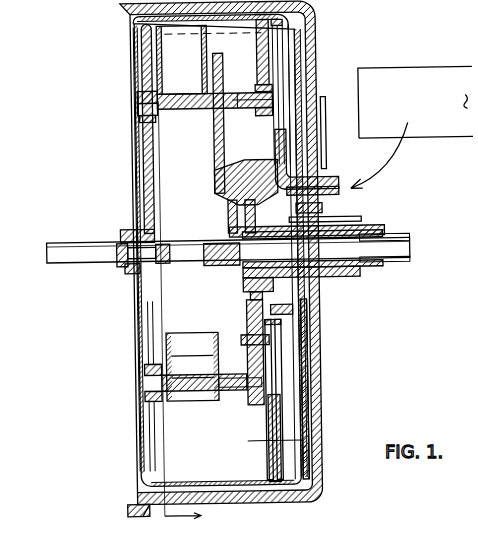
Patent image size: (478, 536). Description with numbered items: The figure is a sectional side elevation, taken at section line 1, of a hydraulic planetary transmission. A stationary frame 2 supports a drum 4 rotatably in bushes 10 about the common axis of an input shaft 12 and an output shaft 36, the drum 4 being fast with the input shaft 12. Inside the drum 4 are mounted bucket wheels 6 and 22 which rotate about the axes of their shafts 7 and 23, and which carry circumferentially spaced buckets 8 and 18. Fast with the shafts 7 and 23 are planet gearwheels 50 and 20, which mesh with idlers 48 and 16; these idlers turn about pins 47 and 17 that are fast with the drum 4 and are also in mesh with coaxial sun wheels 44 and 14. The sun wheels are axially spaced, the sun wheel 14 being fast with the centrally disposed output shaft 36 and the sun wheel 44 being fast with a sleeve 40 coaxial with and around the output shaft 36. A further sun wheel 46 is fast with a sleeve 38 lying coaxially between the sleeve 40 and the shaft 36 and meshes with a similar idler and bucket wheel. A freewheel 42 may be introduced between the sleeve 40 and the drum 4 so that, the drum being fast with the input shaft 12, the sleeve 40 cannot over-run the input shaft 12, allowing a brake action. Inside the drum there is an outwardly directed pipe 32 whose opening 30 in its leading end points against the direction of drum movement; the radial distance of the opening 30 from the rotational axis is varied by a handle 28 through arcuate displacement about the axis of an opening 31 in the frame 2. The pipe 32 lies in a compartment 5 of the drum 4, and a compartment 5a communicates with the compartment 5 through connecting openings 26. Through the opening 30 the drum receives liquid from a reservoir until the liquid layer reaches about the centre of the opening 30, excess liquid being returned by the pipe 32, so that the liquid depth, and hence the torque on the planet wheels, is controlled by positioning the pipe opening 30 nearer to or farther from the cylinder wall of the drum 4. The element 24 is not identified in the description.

The section line I—I 1 is at (173, 315).
The frame 2 is at (130, 487).
The drum 4 is at (150, 442).
The compartment 5 is at (295, 455).
The compartment 5a is at (300, 441).
The bucket wheel 6 is at (160, 396).
The shaft 7 is at (234, 384).
The bucket 8 is at (170, 342).
The bush 10 is at (124, 270).
The input shaft 12 is at (80, 256).
The sun wheel 14 is at (230, 221).
The idler 16 is at (229, 191).
The pin 17 is at (228, 167).
The bucket 18 is at (182, 165).
The planet gearwheel 20 is at (156, 121).
The bucket wheel 22 is at (136, 90).
The shaft 23 is at (192, 100).
The bearing bushing 24 is at (259, 66).
The connecting openings 26 is at (117, 36).
The handle 28 is at (329, 102).
The opening 30 is at (288, 23).
The opening 31 is at (322, 186).
The pipe 32 is at (289, 76).
The output shaft 36 is at (402, 263).
The sleeve 38 is at (376, 270).
The sleeve 40 is at (348, 279).
The freewheel 42 is at (300, 291).
The sun wheel 44 is at (285, 318).
The sun wheel 46 is at (275, 338).
The pin 47 is at (250, 340).
The idler 48 is at (262, 350).
The planet gearwheel 50 is at (272, 408).